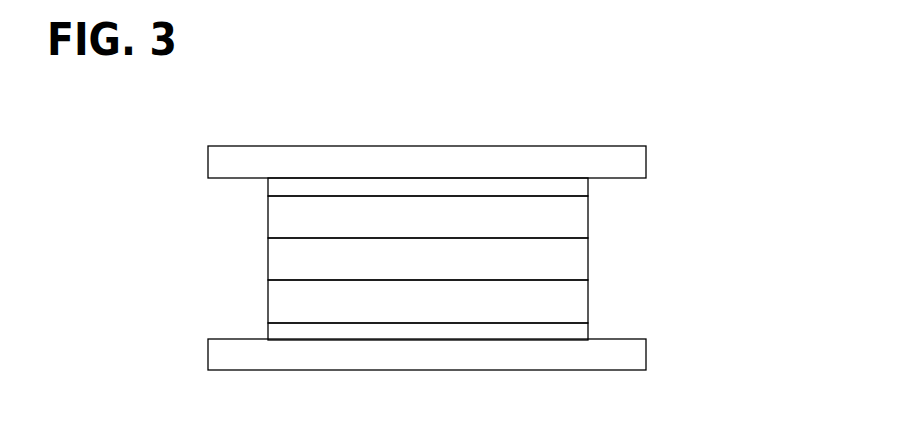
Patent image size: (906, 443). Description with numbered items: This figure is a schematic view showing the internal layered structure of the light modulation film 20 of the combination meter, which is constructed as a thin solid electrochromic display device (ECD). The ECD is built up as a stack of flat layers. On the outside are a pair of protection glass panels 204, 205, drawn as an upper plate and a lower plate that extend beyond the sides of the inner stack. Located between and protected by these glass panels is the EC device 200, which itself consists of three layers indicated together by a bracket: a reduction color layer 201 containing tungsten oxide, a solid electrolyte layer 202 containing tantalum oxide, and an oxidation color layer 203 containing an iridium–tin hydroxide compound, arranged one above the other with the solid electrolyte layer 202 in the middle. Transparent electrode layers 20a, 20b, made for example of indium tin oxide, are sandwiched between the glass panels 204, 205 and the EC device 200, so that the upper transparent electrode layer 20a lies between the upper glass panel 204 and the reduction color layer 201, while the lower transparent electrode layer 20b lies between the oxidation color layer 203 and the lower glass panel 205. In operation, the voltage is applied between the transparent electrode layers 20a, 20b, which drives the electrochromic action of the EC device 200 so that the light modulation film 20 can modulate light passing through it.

The light modulation film 20 is at (442, 148).
The protection glass panel 204 is at (574, 148).
The protection glass panel 205 is at (573, 370).
The transparent electrode layer 20a is at (588, 186).
The EC device 200 is at (733, 208).
The reduction color layer 201 is at (588, 224).
The solid electrolyte layer 202 is at (588, 261).
The oxidation color layer 203 is at (588, 296).
The transparent electrode layer 20b is at (588, 331).